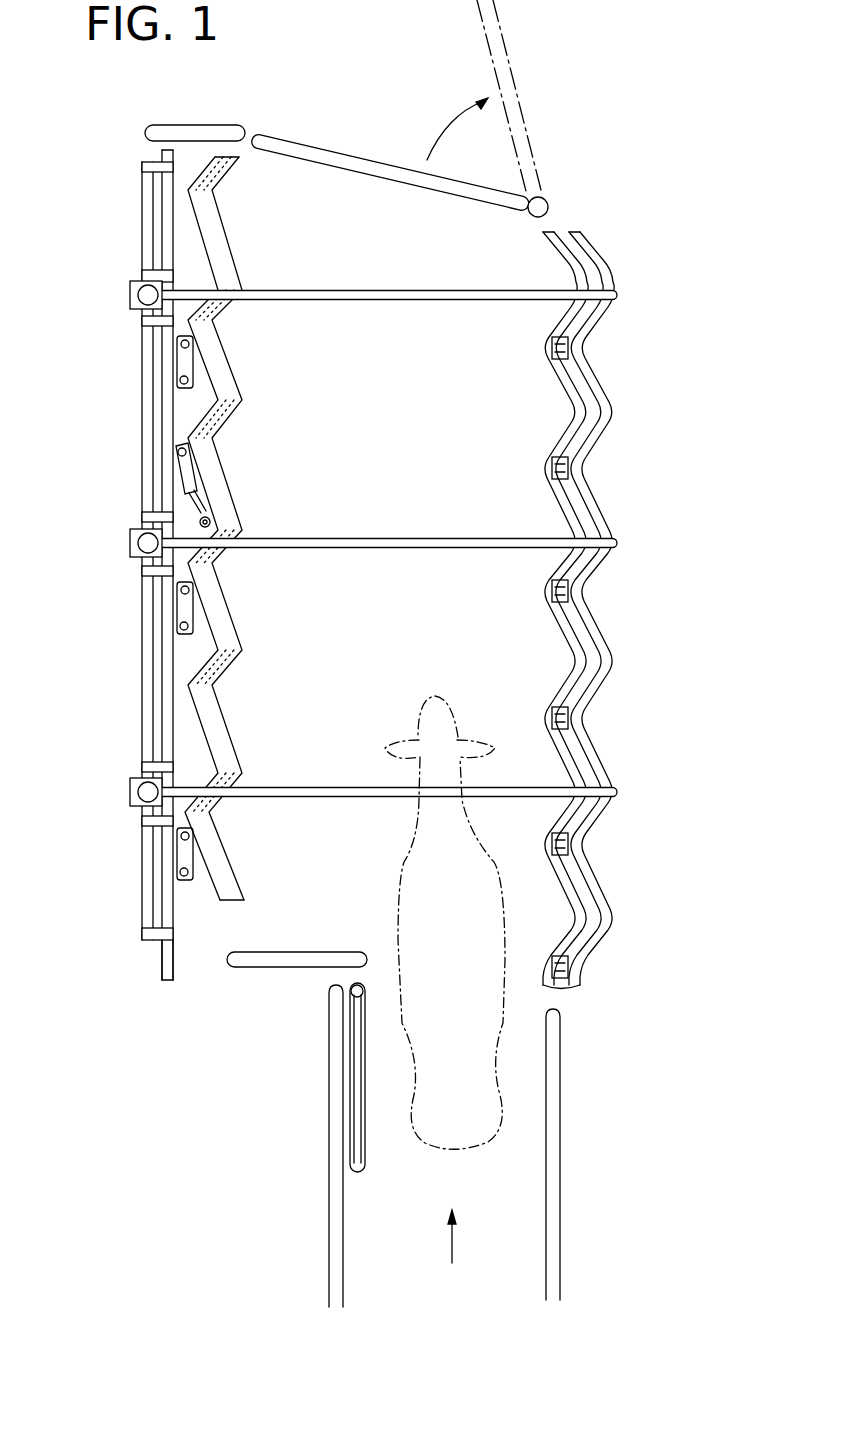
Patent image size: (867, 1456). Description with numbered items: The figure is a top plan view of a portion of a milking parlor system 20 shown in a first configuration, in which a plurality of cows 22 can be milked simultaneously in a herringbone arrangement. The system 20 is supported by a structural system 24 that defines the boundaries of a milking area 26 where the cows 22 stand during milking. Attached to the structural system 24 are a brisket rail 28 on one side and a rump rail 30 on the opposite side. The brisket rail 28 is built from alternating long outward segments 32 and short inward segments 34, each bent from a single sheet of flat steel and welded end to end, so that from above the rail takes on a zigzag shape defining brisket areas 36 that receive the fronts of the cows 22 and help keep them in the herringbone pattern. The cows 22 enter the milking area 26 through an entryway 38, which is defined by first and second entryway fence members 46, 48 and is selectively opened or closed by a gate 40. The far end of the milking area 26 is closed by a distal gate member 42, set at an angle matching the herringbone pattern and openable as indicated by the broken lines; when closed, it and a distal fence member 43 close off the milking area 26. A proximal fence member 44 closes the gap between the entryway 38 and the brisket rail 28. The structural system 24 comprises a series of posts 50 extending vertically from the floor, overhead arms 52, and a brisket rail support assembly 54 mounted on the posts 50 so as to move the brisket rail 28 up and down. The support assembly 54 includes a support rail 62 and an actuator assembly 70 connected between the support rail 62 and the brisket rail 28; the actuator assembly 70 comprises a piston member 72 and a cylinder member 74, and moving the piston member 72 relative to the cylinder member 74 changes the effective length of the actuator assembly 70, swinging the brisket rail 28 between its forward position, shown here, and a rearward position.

The milking parlor system 20 is at (575, 125).
The cow 22 is at (398, 920).
The structural system 24 is at (138, 958).
The milking area 26 is at (432, 423).
The brisket rail 28 is at (270, 528).
The rump rail 30 is at (548, 650).
The long outward segment 32 is at (230, 223).
The short inward segment 34 is at (240, 168).
The brisket area 36 is at (246, 199).
The entryway 38 is at (452, 1253).
The gate 40 is at (360, 1145).
The distal gate member 42 is at (340, 158).
The distal fence member 43 is at (193, 126).
The proximal fence member 44 is at (283, 963).
The first entryway fence member 46 is at (330, 1217).
The second entryway fence member 48 is at (556, 1167).
The post 50 is at (136, 297).
The overhead arm 52 is at (430, 297).
The brisket rail support assembly 54 is at (279, 790).
The support rail 62 is at (160, 973).
The actuator assembly 70 is at (127, 468).
The piston member 72 is at (200, 512).
The cylinder member 74 is at (193, 482).